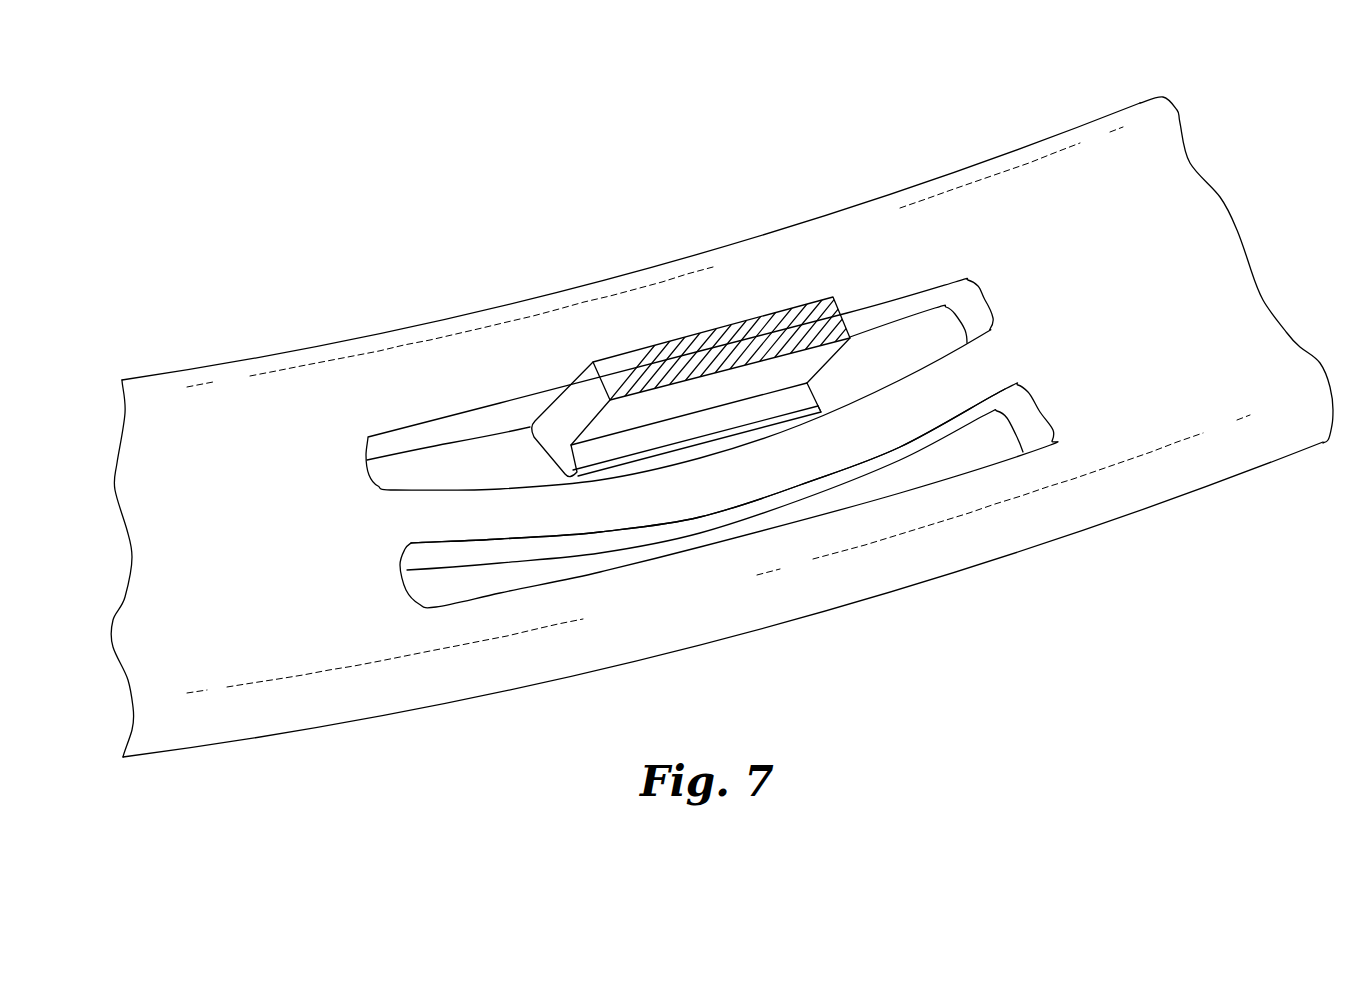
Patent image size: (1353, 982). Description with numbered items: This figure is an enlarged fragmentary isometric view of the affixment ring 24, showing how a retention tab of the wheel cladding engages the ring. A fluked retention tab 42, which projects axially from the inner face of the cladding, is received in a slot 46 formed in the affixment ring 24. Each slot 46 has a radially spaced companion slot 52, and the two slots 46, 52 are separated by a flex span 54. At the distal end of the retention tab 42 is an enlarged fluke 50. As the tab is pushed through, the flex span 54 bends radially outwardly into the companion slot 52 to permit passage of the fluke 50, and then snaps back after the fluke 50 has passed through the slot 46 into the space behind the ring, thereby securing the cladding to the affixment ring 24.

The affixment ring 24 is at (278, 586).
The retention tab 42 is at (583, 397).
The slot 46 is at (437, 473).
The fluke 50 is at (703, 430).
The companion slot 52 is at (440, 583).
The flex span 54 is at (680, 493).